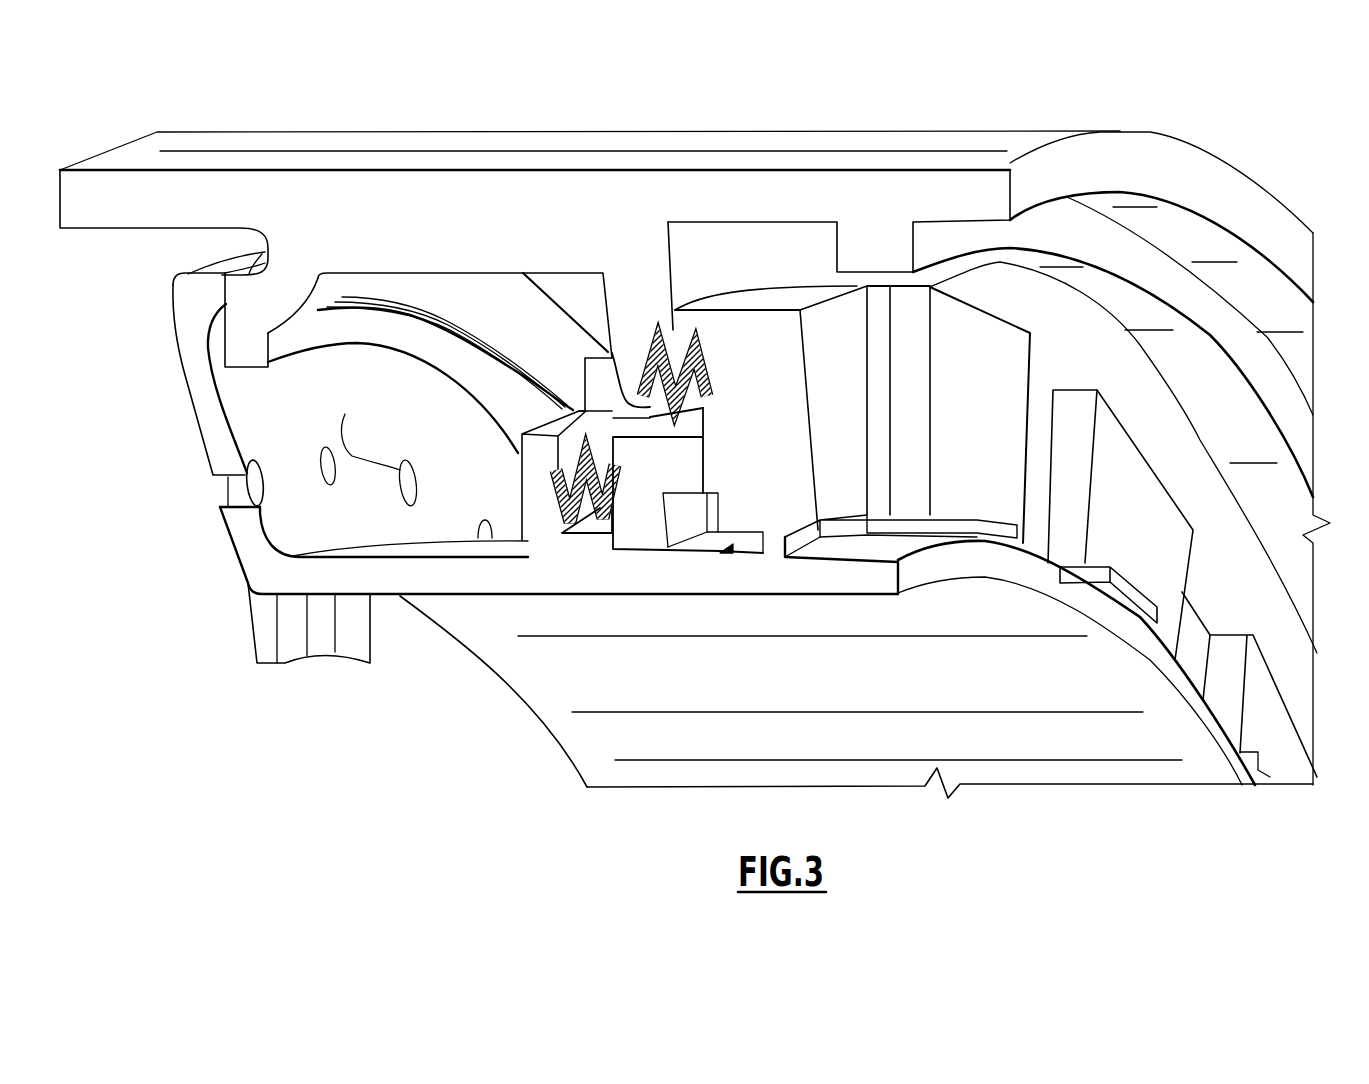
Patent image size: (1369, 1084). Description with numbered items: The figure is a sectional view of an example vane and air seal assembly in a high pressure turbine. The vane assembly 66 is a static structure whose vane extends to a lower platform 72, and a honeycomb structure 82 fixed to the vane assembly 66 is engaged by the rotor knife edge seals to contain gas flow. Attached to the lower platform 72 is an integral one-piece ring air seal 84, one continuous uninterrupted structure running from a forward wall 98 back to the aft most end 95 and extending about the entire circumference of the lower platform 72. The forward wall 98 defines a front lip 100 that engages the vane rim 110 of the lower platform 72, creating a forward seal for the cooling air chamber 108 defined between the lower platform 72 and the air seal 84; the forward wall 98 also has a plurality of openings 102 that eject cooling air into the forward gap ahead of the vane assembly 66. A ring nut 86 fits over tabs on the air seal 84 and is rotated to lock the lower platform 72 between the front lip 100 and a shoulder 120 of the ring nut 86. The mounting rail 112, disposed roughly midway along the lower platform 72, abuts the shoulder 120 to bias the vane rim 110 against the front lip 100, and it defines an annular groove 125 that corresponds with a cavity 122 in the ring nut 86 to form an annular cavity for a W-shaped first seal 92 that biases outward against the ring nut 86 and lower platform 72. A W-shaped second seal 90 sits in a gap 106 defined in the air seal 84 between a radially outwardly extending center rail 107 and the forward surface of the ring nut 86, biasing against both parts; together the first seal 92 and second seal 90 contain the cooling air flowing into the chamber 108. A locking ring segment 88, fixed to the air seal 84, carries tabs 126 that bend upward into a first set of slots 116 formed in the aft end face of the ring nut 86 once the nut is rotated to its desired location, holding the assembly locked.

The vane assembly 66 is at (937, 140).
The lower platform 72 is at (1132, 162).
The honeycomb structure 82 is at (267, 632).
The ring air seal 84 is at (335, 577).
The ring nut 86 is at (1182, 557).
The locking ring segment 88 is at (998, 548).
The second seal 90 is at (560, 510).
The first seal 92 is at (707, 383).
The aft most end 95 is at (1230, 767).
The forward wall 98 is at (210, 430).
The front lip 100 is at (207, 286).
The openings 102 is at (247, 483).
The gap 106 is at (592, 535).
The center rail 107 is at (543, 487).
The cooling air chamber 108 is at (447, 513).
The vane rim 110 is at (247, 343).
The mounting rail 112 is at (622, 292).
The first set of slots 116 is at (907, 415).
The shoulder 120 is at (688, 325).
The cavity 122 is at (687, 426).
The annular groove 125 is at (612, 353).
The tabs 126 is at (957, 520).